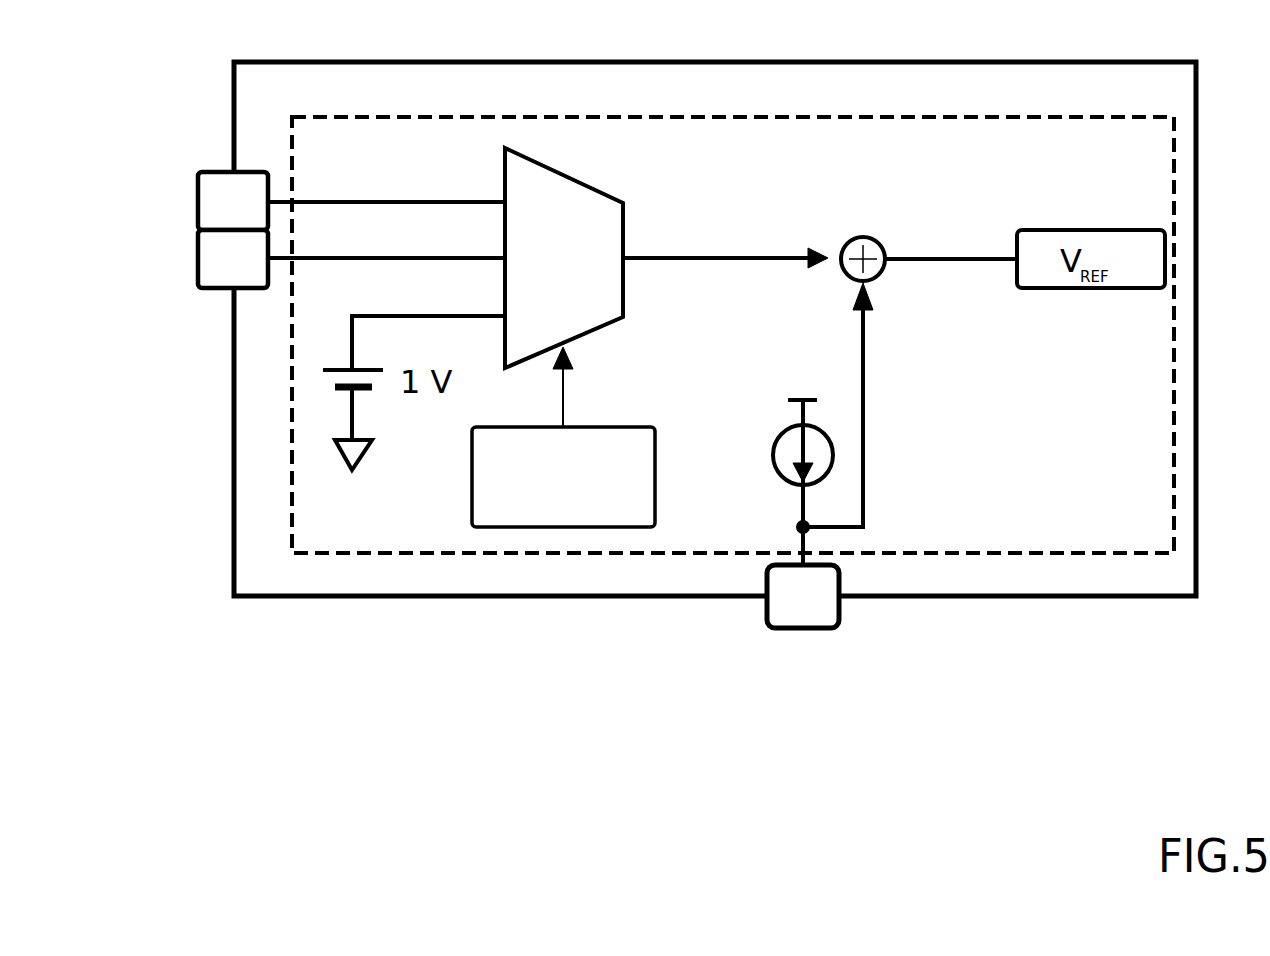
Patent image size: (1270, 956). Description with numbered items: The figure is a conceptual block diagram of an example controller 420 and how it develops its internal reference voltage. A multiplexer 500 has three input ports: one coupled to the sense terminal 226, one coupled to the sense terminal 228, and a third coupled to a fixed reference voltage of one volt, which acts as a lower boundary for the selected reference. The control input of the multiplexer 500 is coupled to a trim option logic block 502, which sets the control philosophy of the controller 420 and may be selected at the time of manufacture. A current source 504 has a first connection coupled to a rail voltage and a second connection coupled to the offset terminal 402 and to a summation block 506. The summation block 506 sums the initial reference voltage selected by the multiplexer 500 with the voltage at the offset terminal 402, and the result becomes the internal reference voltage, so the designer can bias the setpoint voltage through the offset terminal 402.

The controller 420 is at (426, 112).
The sense terminal 226 is at (216, 170).
The sense terminal 228 is at (230, 262).
The multiplexer 500 is at (616, 211).
The trim option logic block 502 is at (650, 432).
The current source 504 is at (780, 488).
The summation block 506 is at (888, 252).
The offset terminal 402 is at (838, 623).